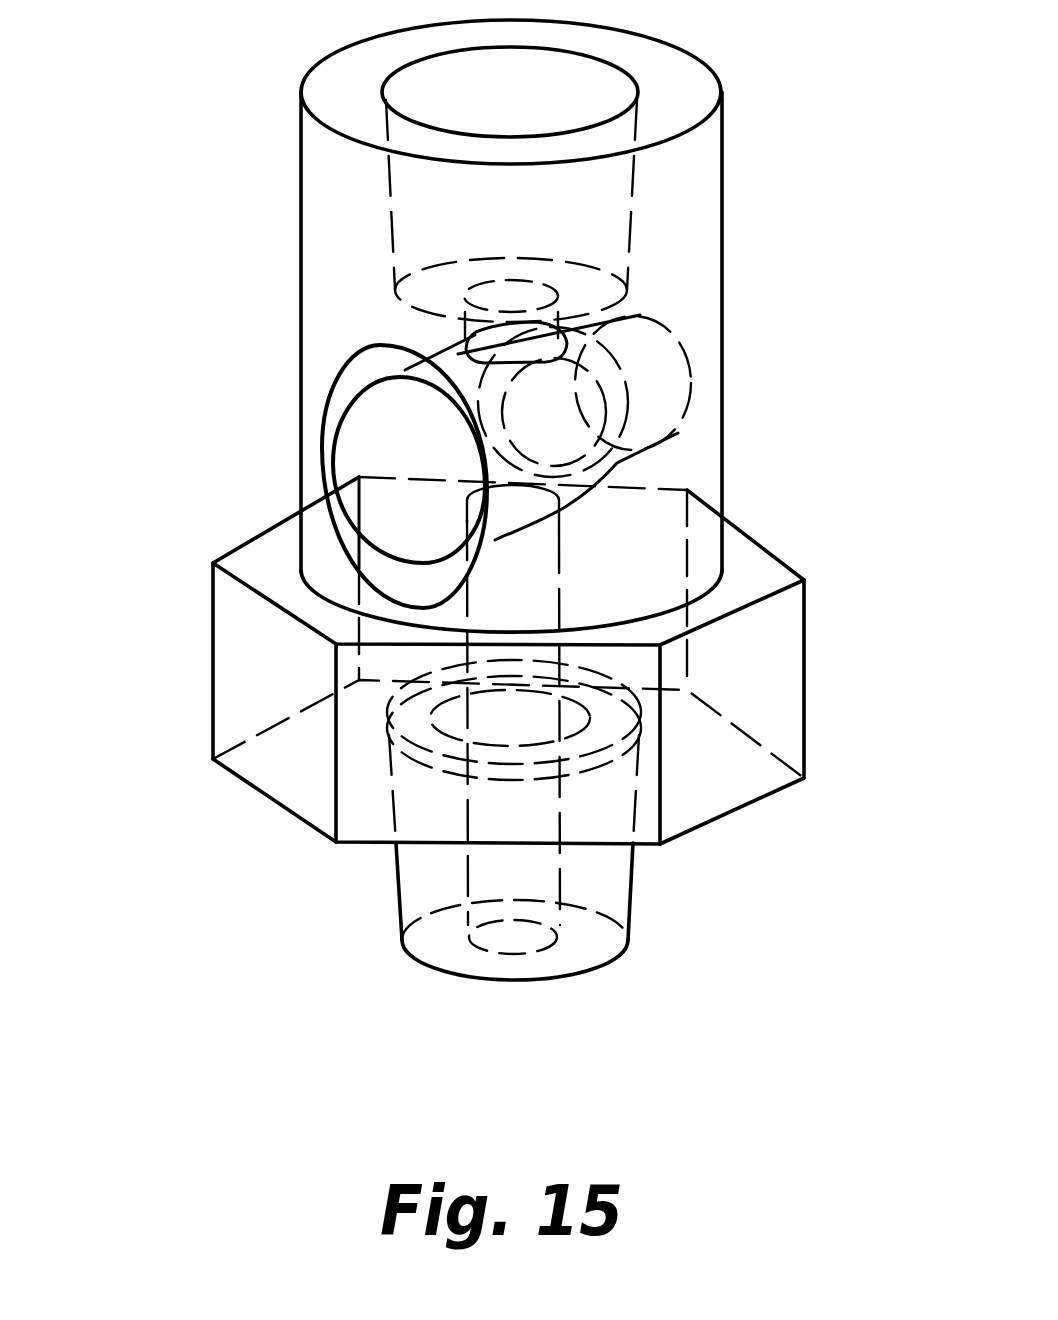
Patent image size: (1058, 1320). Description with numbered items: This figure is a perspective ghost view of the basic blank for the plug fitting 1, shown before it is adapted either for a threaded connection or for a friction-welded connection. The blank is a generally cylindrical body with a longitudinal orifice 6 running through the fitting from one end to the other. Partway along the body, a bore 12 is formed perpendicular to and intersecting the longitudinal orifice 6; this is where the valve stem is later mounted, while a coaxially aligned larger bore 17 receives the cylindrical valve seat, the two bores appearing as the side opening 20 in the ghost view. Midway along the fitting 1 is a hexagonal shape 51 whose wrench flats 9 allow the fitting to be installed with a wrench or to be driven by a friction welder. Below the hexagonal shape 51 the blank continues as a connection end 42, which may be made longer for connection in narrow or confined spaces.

The fitting 1 is at (275, 449).
The longitudinal orifice 6 is at (508, 917).
The wrench flats 9 is at (292, 765).
The bore 12 is at (645, 370).
The larger bore 17 is at (390, 423).
The side port opening 20 is at (385, 502).
The connection end 42 is at (613, 877).
The hexagonal shape 51 is at (538, 691).